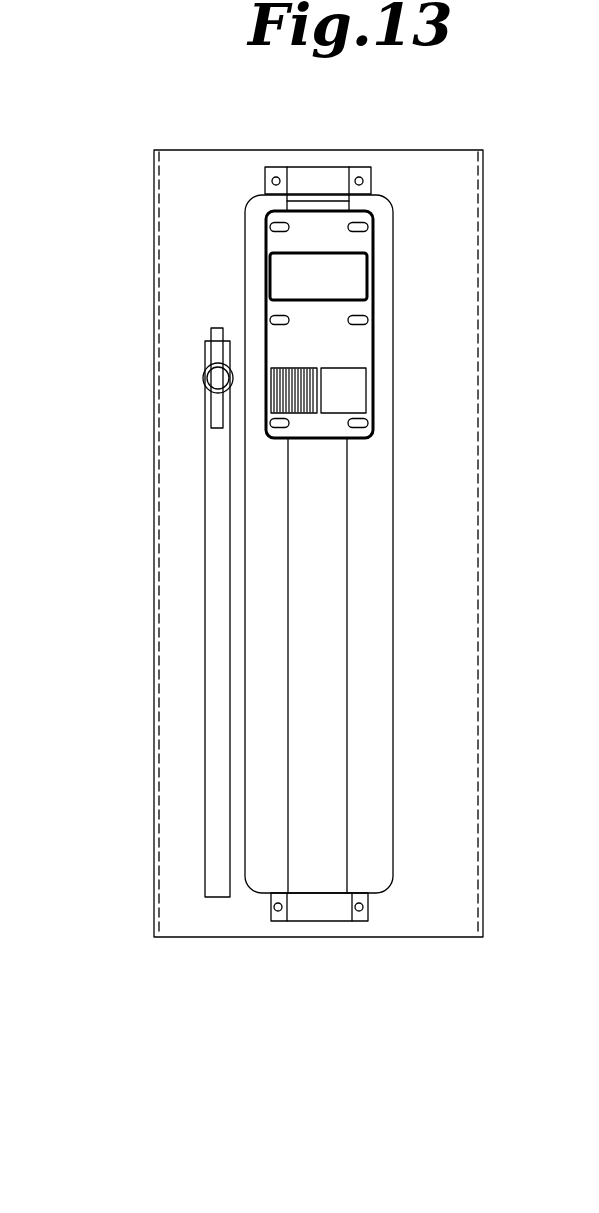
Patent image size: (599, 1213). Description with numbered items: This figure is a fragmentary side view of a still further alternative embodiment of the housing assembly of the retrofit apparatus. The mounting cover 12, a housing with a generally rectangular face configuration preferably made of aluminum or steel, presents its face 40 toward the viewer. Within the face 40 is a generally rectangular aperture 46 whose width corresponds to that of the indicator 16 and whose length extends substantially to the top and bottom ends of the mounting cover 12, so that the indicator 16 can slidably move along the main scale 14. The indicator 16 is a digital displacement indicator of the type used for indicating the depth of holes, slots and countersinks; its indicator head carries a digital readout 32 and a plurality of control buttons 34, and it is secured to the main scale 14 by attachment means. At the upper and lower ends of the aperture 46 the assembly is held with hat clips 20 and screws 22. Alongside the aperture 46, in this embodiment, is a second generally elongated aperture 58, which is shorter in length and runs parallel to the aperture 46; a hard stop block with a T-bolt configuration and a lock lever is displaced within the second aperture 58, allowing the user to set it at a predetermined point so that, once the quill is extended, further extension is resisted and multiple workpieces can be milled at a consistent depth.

The mounting cover 12 is at (153, 685).
The face 40 is at (167, 767).
The second aperture 58 is at (215, 607).
The aperture 46 is at (248, 828).
The hat clips 20 is at (303, 916).
The screws 22 is at (274, 909).
The main scale 14 is at (302, 861).
The indicator 16 is at (355, 345).
The digital readout 32 is at (285, 275).
The control buttons 34 is at (280, 422).